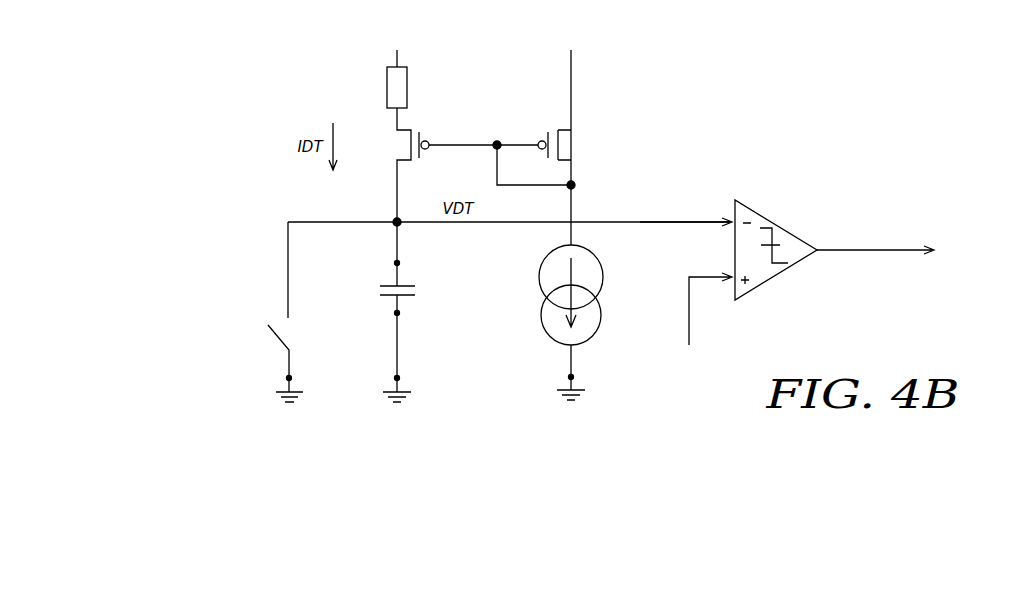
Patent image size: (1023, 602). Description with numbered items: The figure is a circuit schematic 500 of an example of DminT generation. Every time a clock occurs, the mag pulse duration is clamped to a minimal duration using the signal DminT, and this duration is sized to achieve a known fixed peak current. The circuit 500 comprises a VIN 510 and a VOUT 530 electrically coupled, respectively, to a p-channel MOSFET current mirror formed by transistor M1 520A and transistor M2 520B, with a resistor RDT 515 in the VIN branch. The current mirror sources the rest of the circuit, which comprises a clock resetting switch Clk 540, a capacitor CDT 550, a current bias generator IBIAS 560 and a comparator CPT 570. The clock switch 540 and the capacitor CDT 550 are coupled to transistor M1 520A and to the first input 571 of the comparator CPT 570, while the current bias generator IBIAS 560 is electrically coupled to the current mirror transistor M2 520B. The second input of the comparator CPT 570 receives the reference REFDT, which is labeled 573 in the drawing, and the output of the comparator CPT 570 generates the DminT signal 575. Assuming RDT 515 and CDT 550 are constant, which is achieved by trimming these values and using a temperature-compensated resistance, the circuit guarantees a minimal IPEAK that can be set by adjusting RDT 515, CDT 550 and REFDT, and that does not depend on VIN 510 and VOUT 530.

The circuit schematic 500 is at (280, 146).
The VIN 510 is at (402, 26).
The resistor RDT 515 is at (407, 85).
The transistor M1 520A is at (379, 157).
The transistor M2 520B is at (587, 153).
The VOUT 530 is at (569, 26).
The clock resetting switch Clk 540 is at (276, 313).
The capacitor CDT 550 is at (368, 283).
The current bias generator IBIAS 560 is at (522, 286).
The comparator CPT 570 is at (780, 272).
The comparator input 571 is at (650, 219).
The comparator positive input REFDT 573 is at (697, 273).
The DminT signal 575 is at (967, 237).